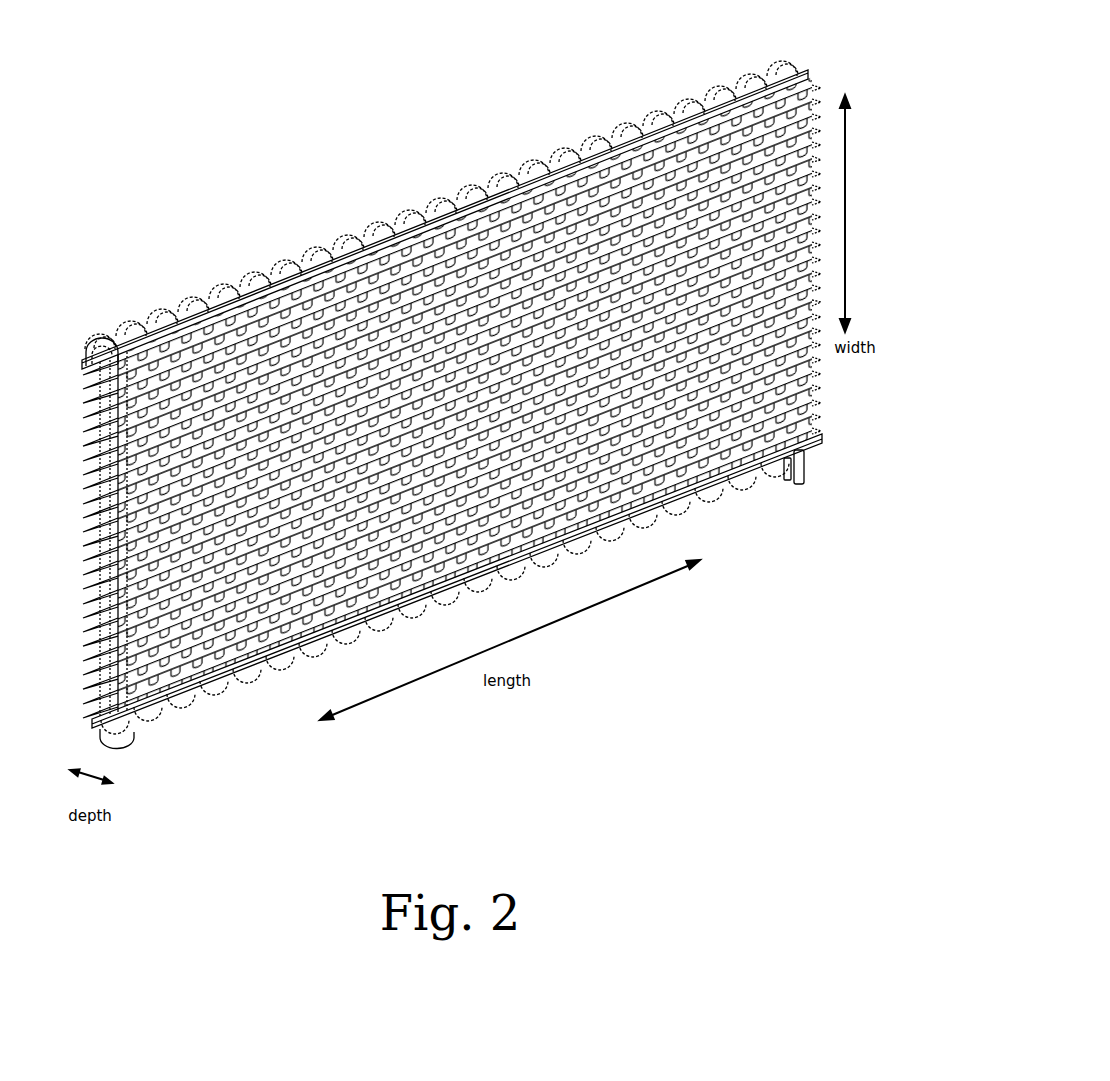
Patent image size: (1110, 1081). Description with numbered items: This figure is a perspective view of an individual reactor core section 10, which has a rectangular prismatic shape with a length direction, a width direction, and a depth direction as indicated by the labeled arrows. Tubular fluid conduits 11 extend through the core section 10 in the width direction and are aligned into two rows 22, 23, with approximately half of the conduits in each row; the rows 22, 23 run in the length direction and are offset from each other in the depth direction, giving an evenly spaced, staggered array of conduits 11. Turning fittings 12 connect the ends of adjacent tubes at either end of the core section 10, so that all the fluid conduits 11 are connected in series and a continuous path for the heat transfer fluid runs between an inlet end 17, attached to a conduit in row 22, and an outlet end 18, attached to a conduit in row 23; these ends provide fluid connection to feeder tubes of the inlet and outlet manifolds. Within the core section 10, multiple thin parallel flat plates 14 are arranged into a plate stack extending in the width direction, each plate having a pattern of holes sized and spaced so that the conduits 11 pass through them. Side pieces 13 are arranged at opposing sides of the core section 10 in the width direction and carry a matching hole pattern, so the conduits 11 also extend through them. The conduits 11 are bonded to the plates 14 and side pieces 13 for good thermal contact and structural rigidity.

The reactor core section 10 is at (459, 396).
The tubular fluid conduits 11 is at (800, 393).
The turning fittings 12 is at (208, 292).
The side pieces 13 is at (84, 352).
The flat plates 14 is at (92, 527).
The inlet end 17 is at (800, 478).
The outlet end 18 is at (782, 472).
The first row of fluid conduits 22 is at (790, 63).
The second row of fluid conduits 23 is at (779, 54).